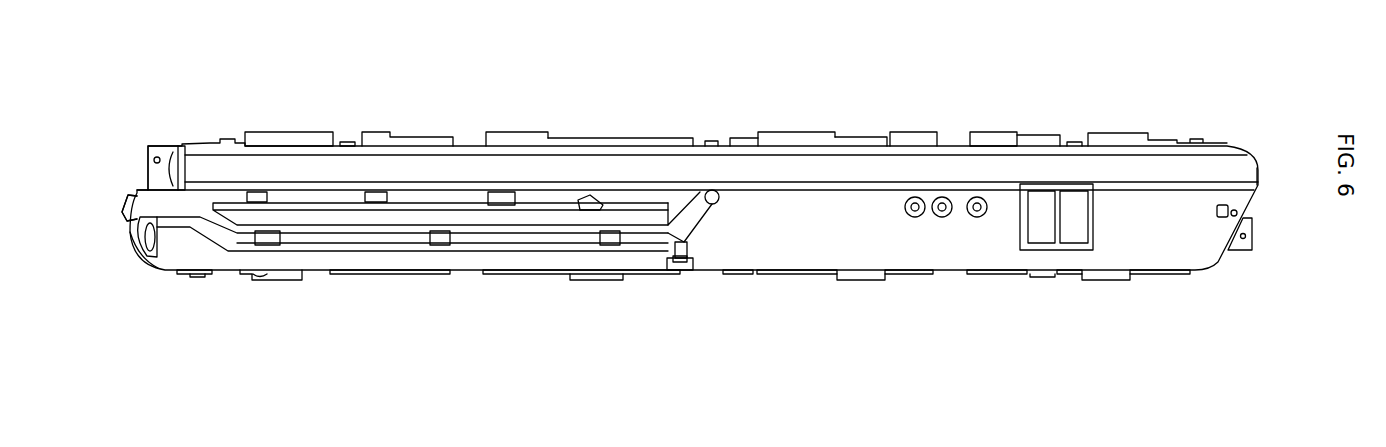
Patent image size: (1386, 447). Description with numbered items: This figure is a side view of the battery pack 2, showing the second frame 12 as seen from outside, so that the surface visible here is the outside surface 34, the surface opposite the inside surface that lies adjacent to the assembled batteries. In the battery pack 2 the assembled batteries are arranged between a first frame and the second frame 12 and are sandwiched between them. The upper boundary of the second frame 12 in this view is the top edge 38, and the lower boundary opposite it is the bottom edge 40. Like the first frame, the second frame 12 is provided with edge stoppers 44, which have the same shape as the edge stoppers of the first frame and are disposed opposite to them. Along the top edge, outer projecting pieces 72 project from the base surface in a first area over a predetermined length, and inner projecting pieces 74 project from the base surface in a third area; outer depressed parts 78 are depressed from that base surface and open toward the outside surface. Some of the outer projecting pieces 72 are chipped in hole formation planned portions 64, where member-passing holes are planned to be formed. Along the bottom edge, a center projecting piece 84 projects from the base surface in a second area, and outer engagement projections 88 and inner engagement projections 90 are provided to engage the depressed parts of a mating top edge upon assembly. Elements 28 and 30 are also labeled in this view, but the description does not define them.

The battery pack 2 is at (1254, 73).
The second frame 12 is at (1200, 243).
The lock lever 28 is at (130, 233).
The upper wall 30 is at (1259, 168).
The outside surface 34 is at (778, 232).
The top edge 38 is at (745, 140).
The bottom edge 40 is at (647, 275).
The edge stoppers 44 is at (937, 134).
The hole formation planned portions 64 is at (358, 144).
The outer projecting pieces 72 is at (284, 135).
The inner projecting pieces 74 is at (521, 134).
The outer depressed parts 78 is at (840, 139).
The center projecting piece 84 is at (536, 275).
The outer engagement projections 88 is at (861, 281).
The inner engagement projections 90 is at (278, 281).